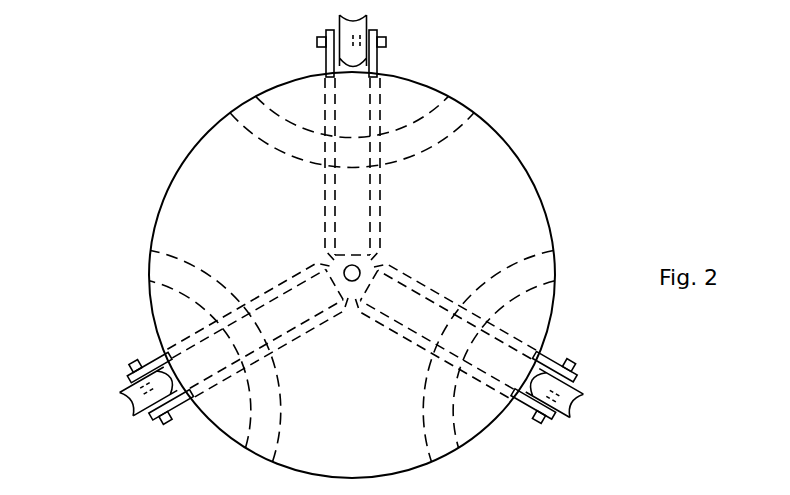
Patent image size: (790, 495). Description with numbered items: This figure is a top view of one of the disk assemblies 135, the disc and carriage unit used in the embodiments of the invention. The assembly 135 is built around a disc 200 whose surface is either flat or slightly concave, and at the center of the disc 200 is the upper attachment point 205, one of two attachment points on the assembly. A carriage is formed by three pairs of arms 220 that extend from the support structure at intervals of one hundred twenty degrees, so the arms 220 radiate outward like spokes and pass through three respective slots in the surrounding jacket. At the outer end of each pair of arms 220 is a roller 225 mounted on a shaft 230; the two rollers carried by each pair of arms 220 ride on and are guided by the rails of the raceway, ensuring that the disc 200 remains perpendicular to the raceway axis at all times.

The disk assembly 135 is at (140, 163).
The disc 200 is at (533, 182).
The upper attachment point 205 is at (360, 266).
The arms 220 is at (377, 73).
The roller 225 is at (339, 15).
The shaft 230 is at (386, 41).